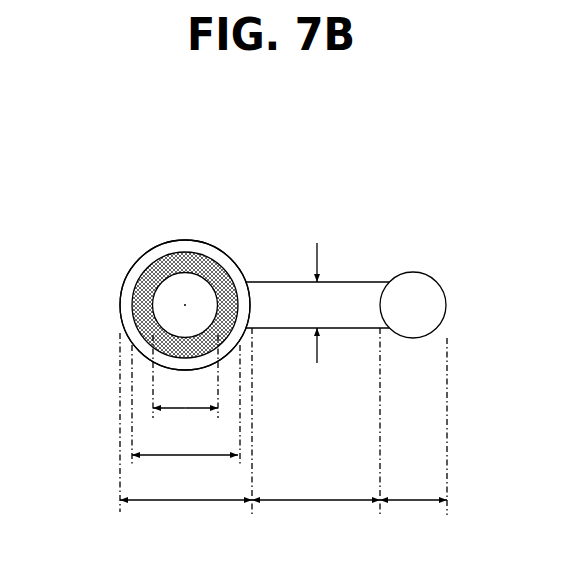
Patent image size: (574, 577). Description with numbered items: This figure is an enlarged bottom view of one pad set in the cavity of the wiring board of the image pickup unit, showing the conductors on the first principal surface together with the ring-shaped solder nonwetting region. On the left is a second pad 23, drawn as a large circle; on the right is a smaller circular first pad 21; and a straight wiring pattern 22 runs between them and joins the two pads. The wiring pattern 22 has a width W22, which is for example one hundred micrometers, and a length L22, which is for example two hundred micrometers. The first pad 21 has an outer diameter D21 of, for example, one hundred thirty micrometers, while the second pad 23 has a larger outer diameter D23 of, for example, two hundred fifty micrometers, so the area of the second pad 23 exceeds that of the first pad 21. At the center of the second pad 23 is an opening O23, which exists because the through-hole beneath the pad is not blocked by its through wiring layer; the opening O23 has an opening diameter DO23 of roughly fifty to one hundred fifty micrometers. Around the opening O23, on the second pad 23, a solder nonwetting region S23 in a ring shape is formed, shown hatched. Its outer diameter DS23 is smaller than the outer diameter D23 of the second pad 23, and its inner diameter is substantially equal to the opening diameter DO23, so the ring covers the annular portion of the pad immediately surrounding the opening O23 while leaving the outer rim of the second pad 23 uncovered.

The first pad 21 is at (424, 274).
The wiring pattern 22 is at (369, 282).
The second pad 23 is at (238, 266).
The opening O23 is at (133, 290).
The solder nonwetting region S23 is at (182, 298).
The width of wiring pattern W22 is at (316, 290).
The length of wiring pattern L22 is at (316, 519).
The outer diameter of first pad D21 is at (413, 519).
The outer diameter of second pad D23 is at (186, 519).
The outer diameter of solder nonwetting region DS23 is at (185, 474).
The opening diameter DO23 is at (186, 427).